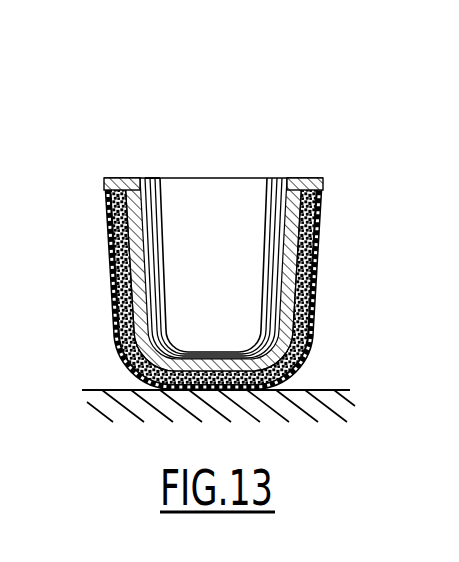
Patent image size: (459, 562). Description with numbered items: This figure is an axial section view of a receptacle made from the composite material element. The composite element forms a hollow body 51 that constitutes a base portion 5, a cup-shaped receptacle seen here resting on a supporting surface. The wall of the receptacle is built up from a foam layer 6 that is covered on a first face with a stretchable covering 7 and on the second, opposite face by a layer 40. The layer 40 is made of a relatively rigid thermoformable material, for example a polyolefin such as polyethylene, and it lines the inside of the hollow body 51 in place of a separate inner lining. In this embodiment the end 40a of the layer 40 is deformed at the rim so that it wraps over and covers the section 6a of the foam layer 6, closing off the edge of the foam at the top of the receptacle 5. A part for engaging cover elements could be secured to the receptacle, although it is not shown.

The base portion 5 is at (180, 224).
The foam layer 6 is at (108, 217).
The section of foam layer 6a is at (110, 164).
The stretchable covering 7 is at (108, 252).
The layer 40 is at (145, 247).
The end of layer 40a is at (127, 179).
The hollow body 51 is at (127, 315).